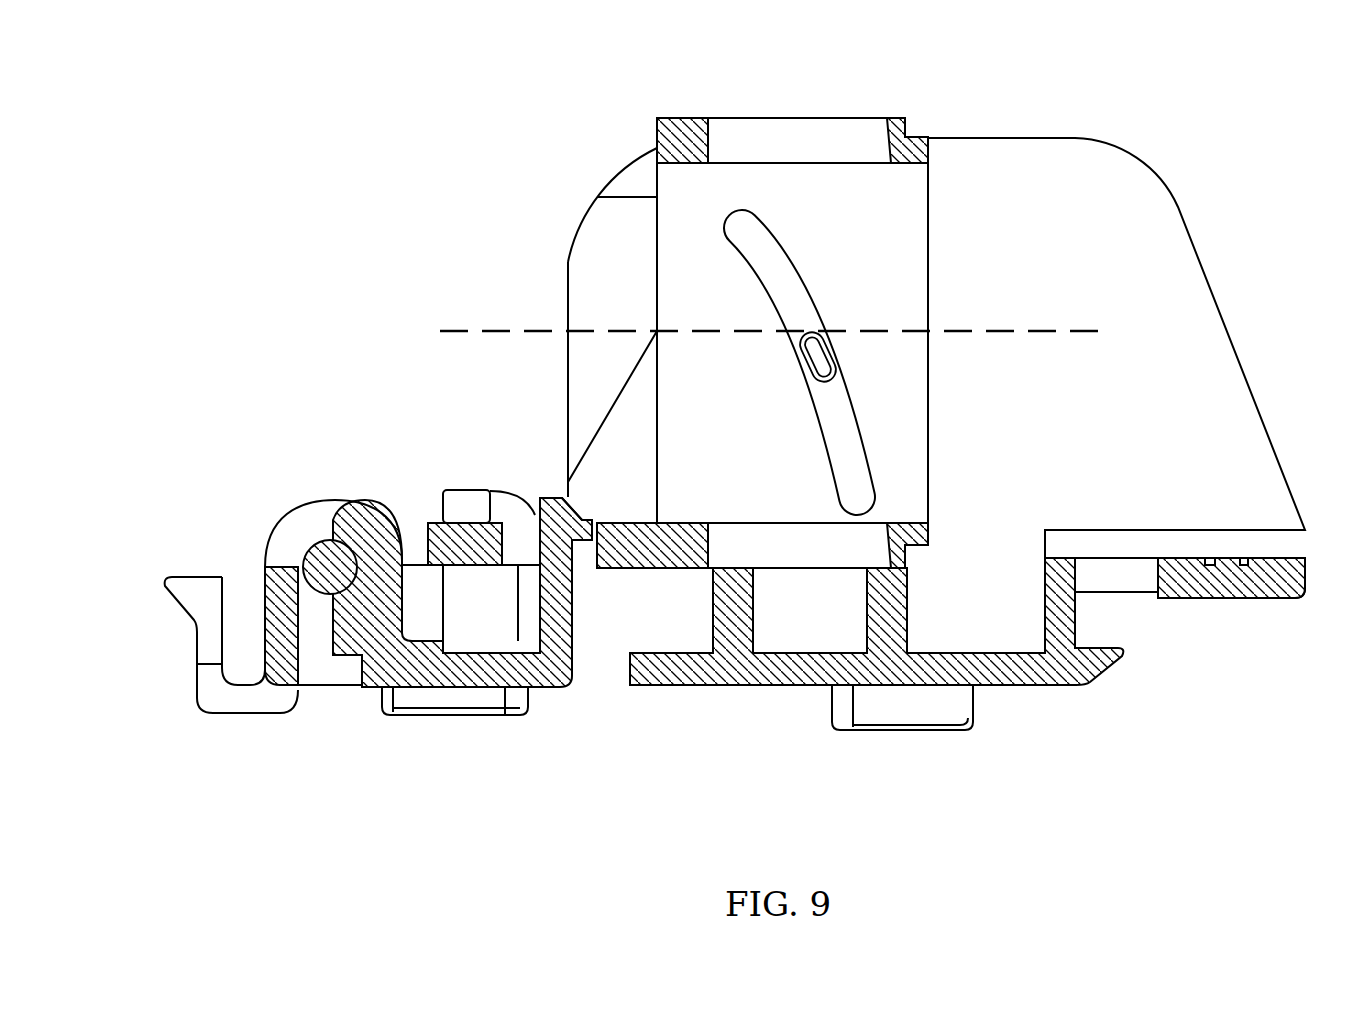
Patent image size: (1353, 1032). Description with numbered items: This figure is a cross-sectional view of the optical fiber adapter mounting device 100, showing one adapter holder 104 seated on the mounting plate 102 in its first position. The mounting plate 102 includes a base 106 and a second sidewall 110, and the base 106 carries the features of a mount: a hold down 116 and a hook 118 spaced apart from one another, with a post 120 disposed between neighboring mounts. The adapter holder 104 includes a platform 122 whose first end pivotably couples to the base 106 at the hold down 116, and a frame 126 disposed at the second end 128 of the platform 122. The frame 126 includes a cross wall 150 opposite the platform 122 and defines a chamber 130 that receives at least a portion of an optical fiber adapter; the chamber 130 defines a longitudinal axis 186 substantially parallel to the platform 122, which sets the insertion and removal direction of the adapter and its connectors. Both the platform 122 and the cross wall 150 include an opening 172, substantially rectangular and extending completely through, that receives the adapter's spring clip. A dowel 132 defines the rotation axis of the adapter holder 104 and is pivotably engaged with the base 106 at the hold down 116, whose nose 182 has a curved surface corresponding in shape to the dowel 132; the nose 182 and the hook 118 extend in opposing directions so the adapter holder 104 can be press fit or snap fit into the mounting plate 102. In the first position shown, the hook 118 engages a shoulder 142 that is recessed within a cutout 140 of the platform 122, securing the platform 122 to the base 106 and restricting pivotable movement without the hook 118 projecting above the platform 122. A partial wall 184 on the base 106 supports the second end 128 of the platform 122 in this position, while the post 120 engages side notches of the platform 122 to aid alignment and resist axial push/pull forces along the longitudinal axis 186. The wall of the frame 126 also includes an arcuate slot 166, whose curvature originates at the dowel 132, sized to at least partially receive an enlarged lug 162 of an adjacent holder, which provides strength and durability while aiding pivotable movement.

The optical fiber adapter mounting device 100 is at (300, 82).
The mounting plate 102 is at (910, 728).
The adapter holder 104 is at (657, 118).
The base 106 is at (795, 682).
The second sidewall 110 is at (1178, 207).
The hold down 116 is at (360, 505).
The hook 118 is at (567, 608).
The post 120 is at (447, 597).
The platform 122 is at (440, 525).
The frame 126 is at (928, 225).
The second end 128 is at (950, 530).
The chamber 130 is at (655, 184).
The dowel 132 is at (318, 558).
The cutout 140 is at (522, 520).
The shoulder 142 is at (575, 540).
The cross wall 150 is at (898, 122).
The lug 162 is at (815, 350).
The arcuate slot 166 is at (804, 280).
The opening 172 is at (790, 116).
The nose 182 is at (338, 508).
The partial wall 184 is at (905, 620).
The longitudinal axis 186 is at (1035, 333).